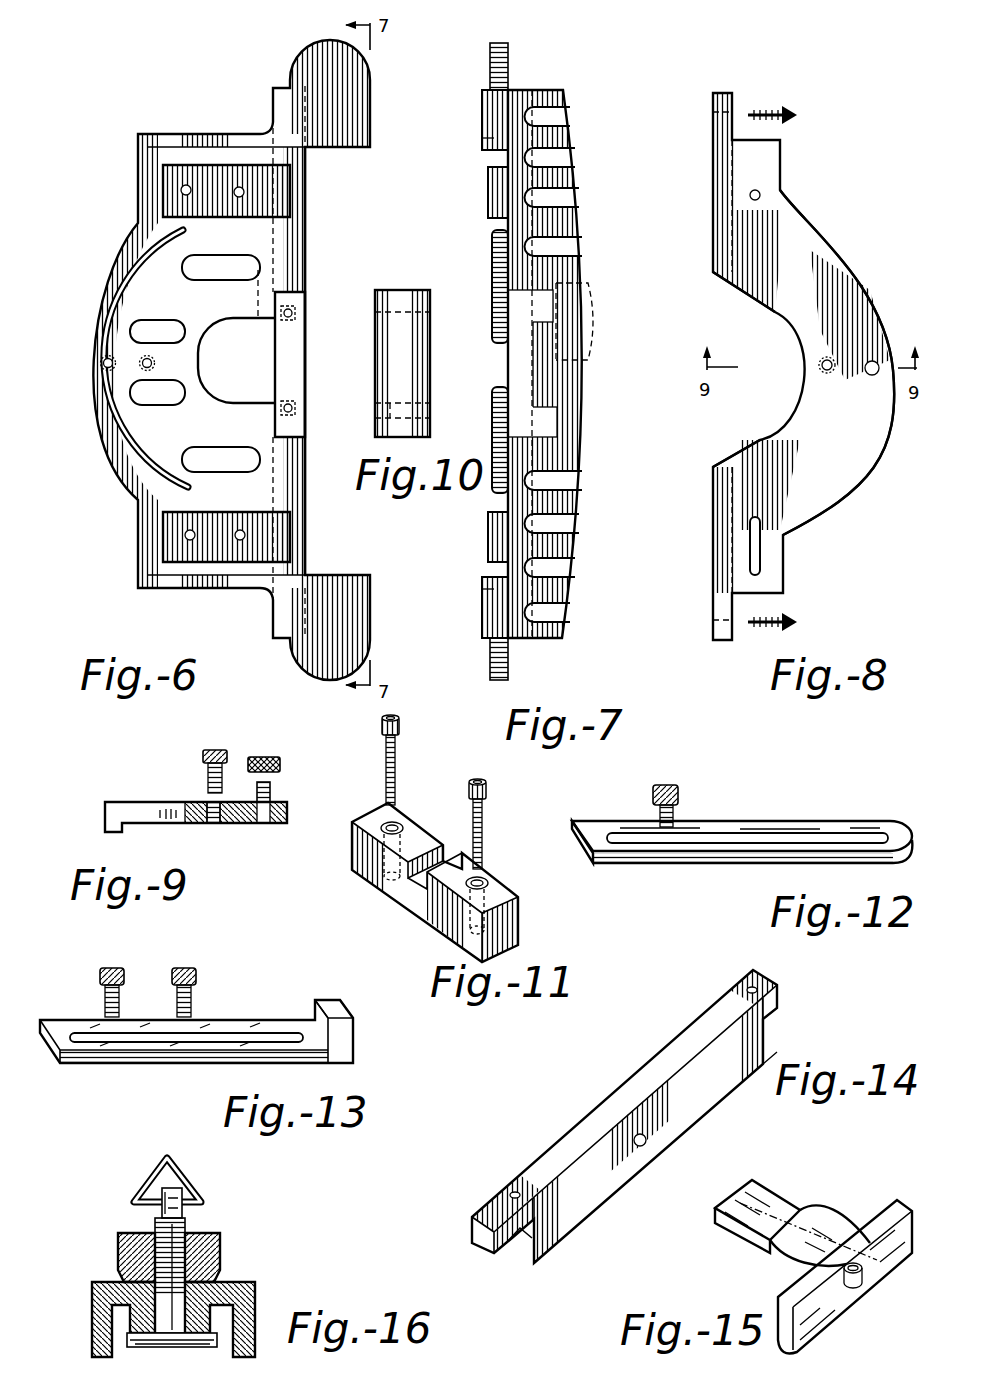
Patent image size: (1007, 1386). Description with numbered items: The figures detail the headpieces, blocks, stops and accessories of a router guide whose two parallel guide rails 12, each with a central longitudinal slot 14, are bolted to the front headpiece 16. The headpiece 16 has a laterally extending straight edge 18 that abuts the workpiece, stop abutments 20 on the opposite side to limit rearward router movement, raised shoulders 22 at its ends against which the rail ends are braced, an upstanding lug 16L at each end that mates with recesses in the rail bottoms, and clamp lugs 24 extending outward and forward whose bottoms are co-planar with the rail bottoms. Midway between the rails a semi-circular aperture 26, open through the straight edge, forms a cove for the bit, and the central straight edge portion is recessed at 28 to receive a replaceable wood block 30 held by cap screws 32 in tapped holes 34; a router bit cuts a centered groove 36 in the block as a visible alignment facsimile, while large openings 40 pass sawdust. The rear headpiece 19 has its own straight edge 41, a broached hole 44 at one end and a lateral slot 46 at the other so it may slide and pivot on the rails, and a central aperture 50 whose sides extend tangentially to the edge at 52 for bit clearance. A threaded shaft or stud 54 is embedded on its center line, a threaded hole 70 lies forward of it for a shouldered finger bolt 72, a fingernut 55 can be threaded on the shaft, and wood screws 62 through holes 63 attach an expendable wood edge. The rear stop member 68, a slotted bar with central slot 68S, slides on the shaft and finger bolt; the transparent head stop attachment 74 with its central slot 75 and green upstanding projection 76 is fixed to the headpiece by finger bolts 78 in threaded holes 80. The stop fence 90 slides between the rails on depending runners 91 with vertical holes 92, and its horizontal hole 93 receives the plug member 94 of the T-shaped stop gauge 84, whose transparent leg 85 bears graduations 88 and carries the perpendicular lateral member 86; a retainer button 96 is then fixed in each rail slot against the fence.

In FIG. 16, the guide rail 12 is at (91, 1310).
In FIG. 16, the central longitudinal slot 14 is at (178, 1320).
In FIG. 6, the headpiece 16 is at (136, 170).
In FIG. 7, the headpiece 16 is at (535, 364).
In FIG. 6, the upstanding lug 16L is at (265, 195).
In FIG. 7, the upstanding lug 16L is at (488, 196).
In FIG. 6, the straight edge 18 is at (308, 242).
In FIG. 7, the straight edge 18 is at (573, 180).
In FIG. 8, the rear headpiece 19 is at (870, 447).
In FIG. 9, the rear headpiece 19 is at (163, 826).
In FIG. 6, the stop abutment 20 is at (121, 287).
In FIG. 7, the stop abutment 20 is at (492, 305).
In FIG. 6, the raised shoulder 22 is at (181, 143).
In FIG. 7, the raised shoulder 22 is at (482, 138).
In FIG. 6, the clamp lug 24 is at (360, 97).
In FIG. 7, the clamp lug 24 is at (490, 50).
In FIG. 6, the semi-circular aperture 26 is at (254, 386).
In FIG. 7, the semi-circular aperture 26 is at (518, 347).
In FIG. 6, the rectangular recess 28 is at (300, 364).
In FIG. 7, the rectangular recess 28 is at (554, 298).
In FIG. 10, the wood block 30 is at (431, 362).
In FIG. 11, the wood block 30 is at (501, 892).
In FIG. 11, the cap screw 32 is at (399, 772).
In FIG. 6, the tapped hole 34 is at (293, 315).
In FIG. 7, the tapped hole 34 is at (588, 340).
In FIG. 11, the groove 36 is at (442, 850).
In FIG. 6, the opening 40 is at (181, 269).
In FIG. 8, the straight edge 41 is at (713, 197).
In FIG. 9, the straight edge 41 is at (101, 800).
In FIG. 8, the broached hole 44 is at (761, 195).
In FIG. 8, the slot 46 is at (761, 547).
In FIG. 8, the aperture 50 is at (773, 355).
In FIG. 9, the aperture 50 is at (142, 808).
In FIG. 8, the tangential extension 52 is at (730, 280).
In FIG. 8, the shaft or stud 54 is at (871, 376).
In FIG. 9, the shaft or stud 54 is at (272, 790).
In FIG. 9, the fingernut 55 is at (280, 759).
In FIG. 8, the round head wood screw 62 is at (797, 115).
In FIG. 8, the hole 63 is at (713, 112).
In FIG. 12, the rear stop member 68 is at (724, 866).
In FIG. 12, the central slot 68S is at (742, 838).
In FIG. 8, the threaded hole 70 is at (820, 372).
In FIG. 9, the threaded hole 70 is at (214, 824).
In FIG. 9, the finger bolt 72 is at (203, 756).
In FIG. 12, the finger bolt 72 is at (678, 794).
In FIG. 13, the head stop attachment 74 is at (146, 1067).
In FIG. 13, the longitudinal central slot 75 is at (221, 1033).
In FIG. 13, the upstanding projection 76 is at (334, 1004).
In FIG. 13, the finger bolt 78 is at (171, 998).
In FIG. 6, the threaded hole 80 is at (141, 361).
In FIG. 15, the stop gauge 84 is at (815, 1263).
In FIG. 15, the leg 85 is at (773, 1210).
In FIG. 15, the lateral member 86 is at (810, 1313).
In FIG. 15, the graduations 88 is at (753, 1231).
In FIG. 14, the stop fence 90 is at (573, 1213).
In FIG. 14, the depending runner 91 is at (528, 1243).
In FIG. 14, the vertical hole 92 is at (509, 1192).
In FIG. 14, the horizontal hole 93 is at (647, 1135).
In FIG. 15, the plug member 94 is at (864, 1280).
In FIG. 16, the retainer button 96 is at (118, 1247).